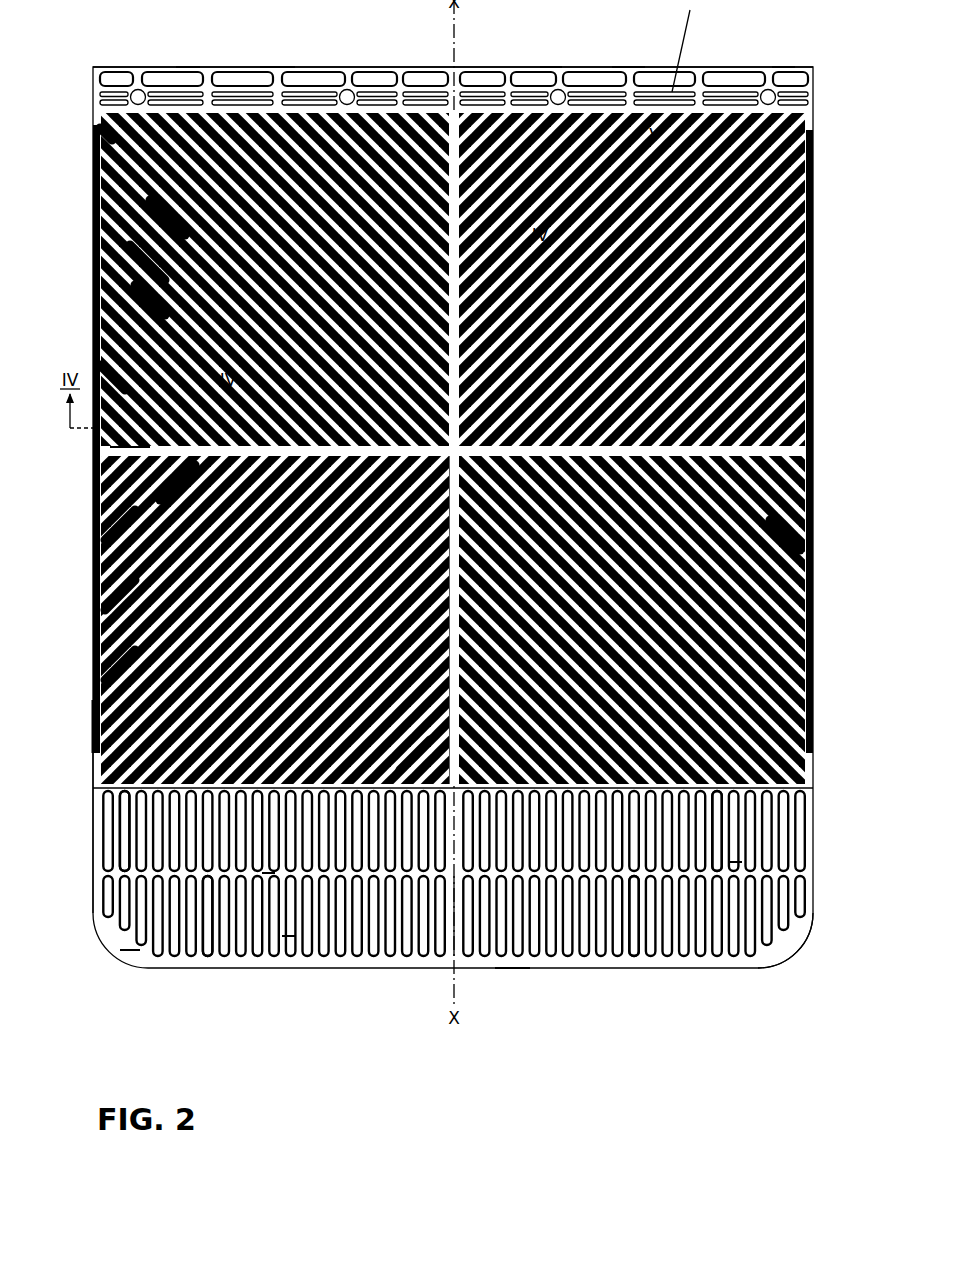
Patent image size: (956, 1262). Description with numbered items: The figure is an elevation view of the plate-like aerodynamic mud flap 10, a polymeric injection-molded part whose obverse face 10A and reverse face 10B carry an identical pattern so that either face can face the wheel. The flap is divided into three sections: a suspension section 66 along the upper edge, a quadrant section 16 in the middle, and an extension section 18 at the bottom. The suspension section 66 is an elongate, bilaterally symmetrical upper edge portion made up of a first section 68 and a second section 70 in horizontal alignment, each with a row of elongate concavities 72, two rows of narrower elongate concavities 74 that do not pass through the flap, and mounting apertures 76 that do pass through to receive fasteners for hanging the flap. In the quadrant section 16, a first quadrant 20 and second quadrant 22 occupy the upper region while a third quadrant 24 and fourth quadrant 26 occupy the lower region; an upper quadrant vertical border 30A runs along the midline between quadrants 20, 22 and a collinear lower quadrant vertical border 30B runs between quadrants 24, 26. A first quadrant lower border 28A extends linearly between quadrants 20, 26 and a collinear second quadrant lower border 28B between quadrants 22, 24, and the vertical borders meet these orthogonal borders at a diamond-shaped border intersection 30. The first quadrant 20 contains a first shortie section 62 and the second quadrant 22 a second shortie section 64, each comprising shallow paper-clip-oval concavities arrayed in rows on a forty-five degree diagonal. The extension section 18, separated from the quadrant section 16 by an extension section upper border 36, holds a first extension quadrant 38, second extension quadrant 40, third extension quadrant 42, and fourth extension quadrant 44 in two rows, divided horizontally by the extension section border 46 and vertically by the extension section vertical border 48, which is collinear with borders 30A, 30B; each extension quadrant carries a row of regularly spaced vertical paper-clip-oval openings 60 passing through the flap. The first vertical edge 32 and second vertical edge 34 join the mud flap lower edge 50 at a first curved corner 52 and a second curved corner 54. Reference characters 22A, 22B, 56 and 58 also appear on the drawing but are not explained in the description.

The mud flap 10 is at (47, 996).
The obverse face 10A is at (96, 550).
The reverse face 10B is at (94, 882).
The quadrant section 16 is at (822, 113).
The extension section 18 is at (822, 790).
The first quadrant 20 is at (97, 372).
The second quadrant 22 is at (150, 262).
The rib end 22A is at (782, 66).
The rib end 22B is at (551, 66).
The third quadrant 24 is at (120, 662).
The fourth quadrant 26 is at (88, 737).
The first quadrant lower border 28A is at (180, 478).
The second quadrant lower border 28B is at (812, 482).
The border intersection 30 is at (120, 595).
The upper quadrant vertical border 30A is at (120, 523).
The lower quadrant vertical border 30B is at (453, 880).
The first vertical edge 32 is at (98, 132).
The second vertical edge 34 is at (814, 190).
The extension section upper border 36 is at (413, 790).
The first extension quadrant 38 is at (130, 831).
The second extension quadrant 40 is at (205, 930).
The third extension quadrant 42 is at (710, 845).
The fourth extension quadrant 44 is at (637, 922).
The extension section border 46 is at (268, 872).
The extension section vertical border 48 is at (452, 910).
The mud flap lower edge 50 is at (512, 962).
The first curved corner 52 is at (128, 950).
The second curved corner 54 is at (790, 943).
The slot 56 is at (165, 212).
The transverse rib 58 is at (150, 450).
The vertical openings 60 is at (288, 934).
The first shortie section 62 is at (150, 297).
The second shortie section 64 is at (706, 93).
The suspension section 66 is at (822, 67).
The first section 68 is at (277, 62).
The second section 70 is at (630, 62).
The elongate concavities 72 is at (186, 78).
The narrower elongate concavities 74 is at (176, 66).
The mounting apertures 76 is at (346, 90).